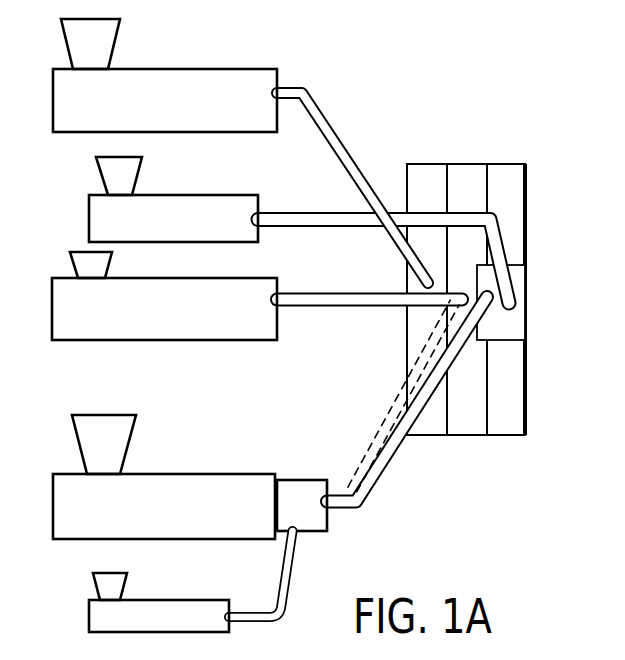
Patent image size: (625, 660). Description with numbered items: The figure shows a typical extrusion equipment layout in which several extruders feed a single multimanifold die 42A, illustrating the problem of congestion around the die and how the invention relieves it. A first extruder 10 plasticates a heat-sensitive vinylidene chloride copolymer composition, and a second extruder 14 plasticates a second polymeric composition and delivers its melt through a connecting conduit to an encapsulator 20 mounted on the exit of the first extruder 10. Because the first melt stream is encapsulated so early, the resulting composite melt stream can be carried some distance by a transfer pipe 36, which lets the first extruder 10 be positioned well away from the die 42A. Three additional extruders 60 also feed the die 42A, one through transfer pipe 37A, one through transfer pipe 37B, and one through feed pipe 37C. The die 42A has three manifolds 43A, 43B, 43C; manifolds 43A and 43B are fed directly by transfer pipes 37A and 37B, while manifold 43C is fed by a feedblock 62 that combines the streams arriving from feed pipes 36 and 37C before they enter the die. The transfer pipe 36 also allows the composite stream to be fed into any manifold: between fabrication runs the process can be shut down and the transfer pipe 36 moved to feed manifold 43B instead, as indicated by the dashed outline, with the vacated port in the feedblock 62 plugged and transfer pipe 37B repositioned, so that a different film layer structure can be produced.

The first extruder 10 is at (178, 518).
The second extruder 14 is at (159, 602).
The encapsulator 20 is at (323, 517).
The transfer pipe 36 is at (370, 487).
The transfer pipe 37A is at (333, 119).
The transfer pipe 37B is at (310, 293).
The feed pipe 37C is at (289, 212).
The multimanifold die 42A is at (492, 164).
The manifold 43A is at (427, 436).
The manifold 43B is at (470, 436).
The manifold 43C is at (515, 436).
The extruder 60 is at (185, 110).
The feedblock 62 is at (512, 320).